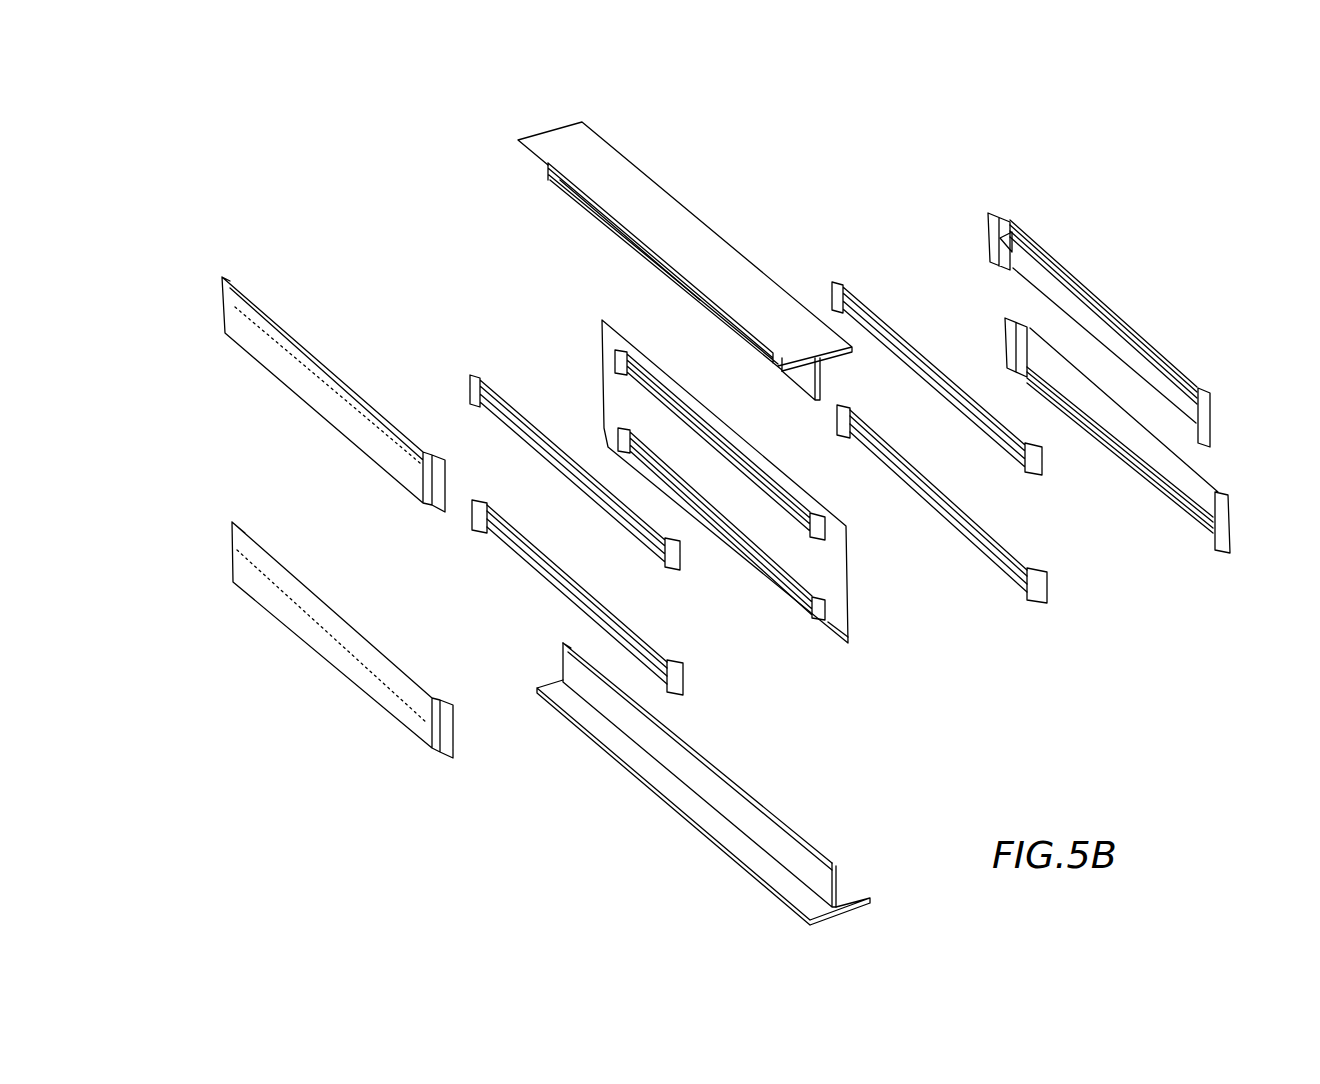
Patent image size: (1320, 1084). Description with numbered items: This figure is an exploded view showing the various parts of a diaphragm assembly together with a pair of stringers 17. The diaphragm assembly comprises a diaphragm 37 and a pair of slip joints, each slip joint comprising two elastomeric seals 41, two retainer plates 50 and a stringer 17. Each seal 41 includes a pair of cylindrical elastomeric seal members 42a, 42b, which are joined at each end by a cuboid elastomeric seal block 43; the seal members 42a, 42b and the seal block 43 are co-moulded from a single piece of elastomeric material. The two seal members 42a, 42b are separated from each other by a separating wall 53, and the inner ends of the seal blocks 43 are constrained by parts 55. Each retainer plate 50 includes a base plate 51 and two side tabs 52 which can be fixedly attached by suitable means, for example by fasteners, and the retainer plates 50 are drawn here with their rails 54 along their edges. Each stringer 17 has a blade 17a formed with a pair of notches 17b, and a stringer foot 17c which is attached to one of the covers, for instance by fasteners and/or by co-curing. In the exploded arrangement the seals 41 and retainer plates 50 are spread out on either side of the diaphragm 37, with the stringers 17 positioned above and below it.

The stringer 17 is at (676, 182).
The blade 17a is at (670, 748).
The notches 17b is at (797, 840).
The stringer foot 17c is at (695, 812).
The diaphragm 37 is at (590, 345).
The elastomeric seal 41 is at (467, 360).
The seal member 42a is at (988, 560).
The seal member 42b is at (920, 468).
The seal block 43 is at (472, 518).
The retainer plate 50 is at (277, 403).
The base plate 51 is at (1052, 290).
The side tab 52 is at (1000, 240).
The separating wall 53 is at (1145, 474).
The bottom edge rail 54 is at (1187, 520).
The part 55 is at (1012, 257).